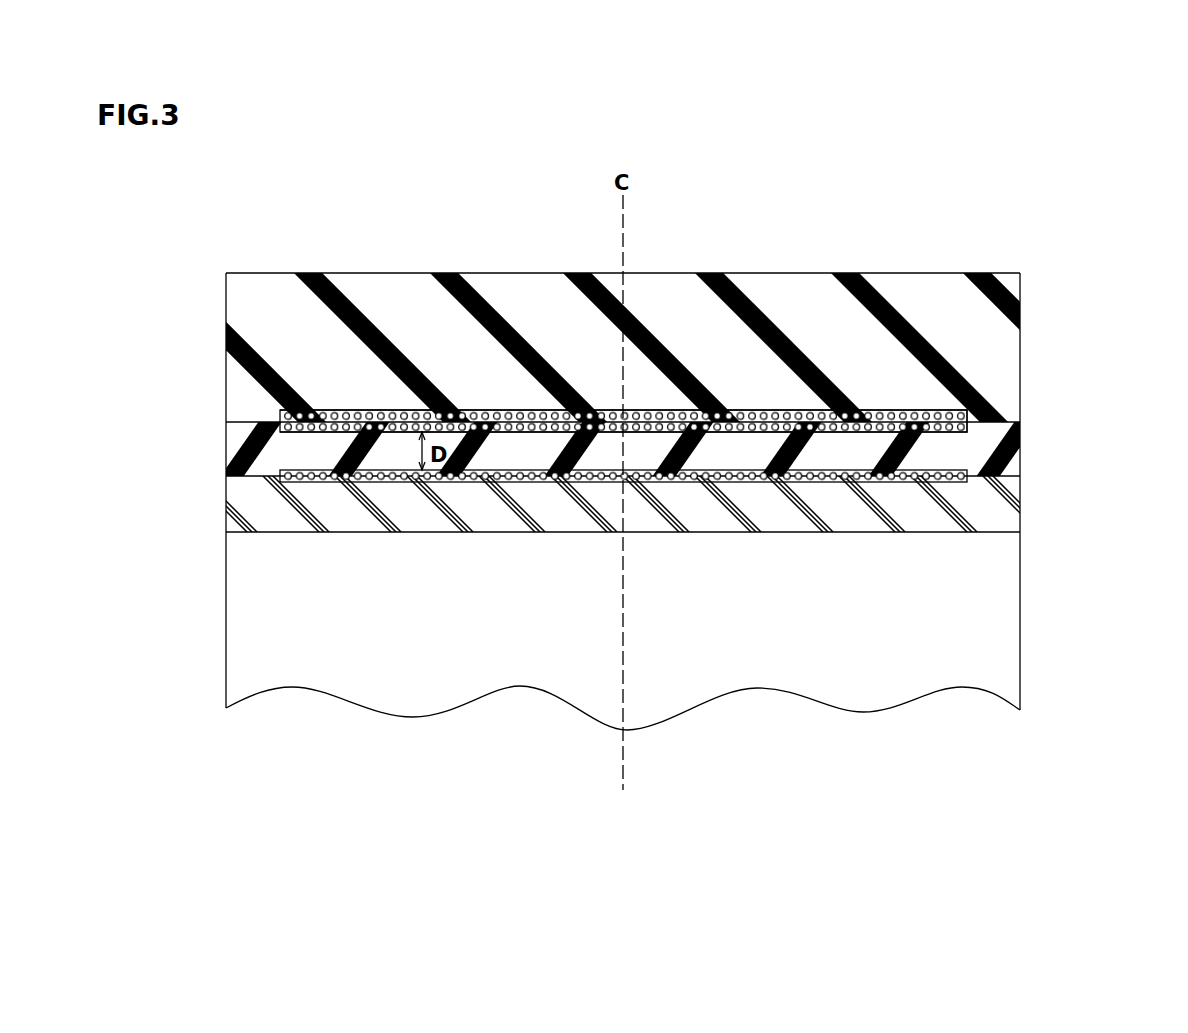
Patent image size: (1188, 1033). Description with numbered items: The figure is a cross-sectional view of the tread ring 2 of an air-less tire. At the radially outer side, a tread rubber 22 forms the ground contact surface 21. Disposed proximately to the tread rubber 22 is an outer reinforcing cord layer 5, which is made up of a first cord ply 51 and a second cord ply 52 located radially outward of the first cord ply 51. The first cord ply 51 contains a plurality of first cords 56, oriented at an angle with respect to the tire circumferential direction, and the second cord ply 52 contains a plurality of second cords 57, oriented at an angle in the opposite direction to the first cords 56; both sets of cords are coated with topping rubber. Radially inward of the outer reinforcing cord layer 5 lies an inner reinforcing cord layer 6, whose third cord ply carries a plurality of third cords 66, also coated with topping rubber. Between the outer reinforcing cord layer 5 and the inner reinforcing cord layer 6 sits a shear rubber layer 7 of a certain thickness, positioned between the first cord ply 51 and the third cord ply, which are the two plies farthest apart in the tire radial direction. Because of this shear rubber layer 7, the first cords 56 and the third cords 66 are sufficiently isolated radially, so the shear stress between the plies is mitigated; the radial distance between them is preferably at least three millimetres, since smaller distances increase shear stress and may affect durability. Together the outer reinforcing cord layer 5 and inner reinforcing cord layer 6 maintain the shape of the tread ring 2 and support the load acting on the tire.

The tread ring 2 is at (1045, 667).
The ground contact surface 21 is at (753, 273).
The tread rubber 22 is at (512, 298).
The outer reinforcing cord layer 5 is at (1118, 290).
The first cord ply 51 is at (943, 430).
The second cord ply 52 is at (918, 413).
The first cords 56 is at (314, 426).
The second cords 57 is at (354, 412).
The inner reinforcing cord layer 6 is at (955, 484).
The third cords 66 is at (325, 480).
The shear rubber layer 7 is at (831, 460).